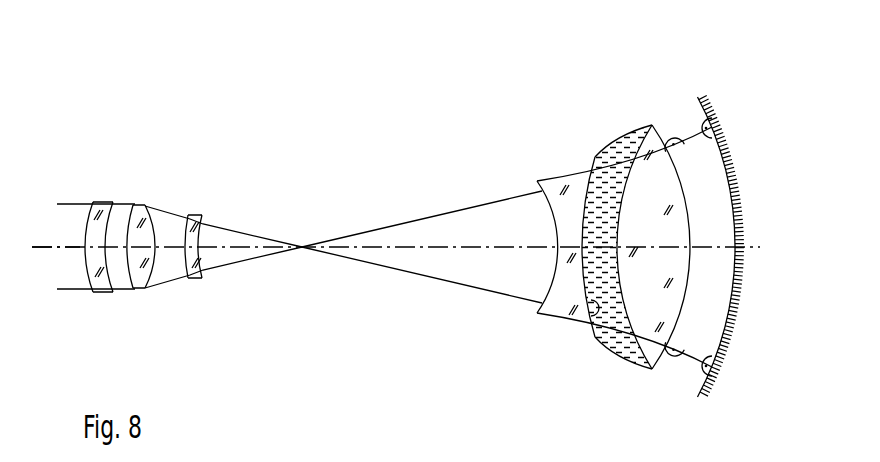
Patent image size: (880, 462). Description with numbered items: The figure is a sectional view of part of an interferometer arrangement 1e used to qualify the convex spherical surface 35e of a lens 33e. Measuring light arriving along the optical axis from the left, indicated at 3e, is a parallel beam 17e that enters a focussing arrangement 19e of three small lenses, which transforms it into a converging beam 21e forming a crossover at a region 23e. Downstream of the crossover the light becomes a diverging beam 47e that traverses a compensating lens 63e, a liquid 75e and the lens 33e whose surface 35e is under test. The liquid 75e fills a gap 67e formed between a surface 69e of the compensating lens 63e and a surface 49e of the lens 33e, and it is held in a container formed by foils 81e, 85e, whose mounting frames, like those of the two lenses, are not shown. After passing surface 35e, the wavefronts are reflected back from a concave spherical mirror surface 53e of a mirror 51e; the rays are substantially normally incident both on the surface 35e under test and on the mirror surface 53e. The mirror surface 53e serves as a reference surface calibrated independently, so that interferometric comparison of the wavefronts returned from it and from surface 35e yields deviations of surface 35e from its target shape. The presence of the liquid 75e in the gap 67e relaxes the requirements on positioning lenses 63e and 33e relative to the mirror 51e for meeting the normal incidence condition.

The interferometer arrangement 1e is at (299, 103).
The object 3e is at (52, 243).
The parallel beam 17e is at (67, 289).
The focussing arrangement 19e is at (207, 302).
The converging beam 21e is at (233, 223).
The region 23e is at (302, 249).
The diverging beam 47e is at (402, 222).
The compensating lens 63e is at (540, 178).
The liquid 75e is at (602, 187).
The gap 67e is at (593, 118).
The foil 81e is at (601, 238).
The foil 85e is at (627, 133).
The concave spherical mirror surface 53e is at (697, 110).
The mirror 51e is at (712, 127).
The surface 69e is at (595, 320).
The surface 49e is at (635, 352).
The lens 33e is at (653, 371).
The convex spherical surface 35e is at (680, 313).